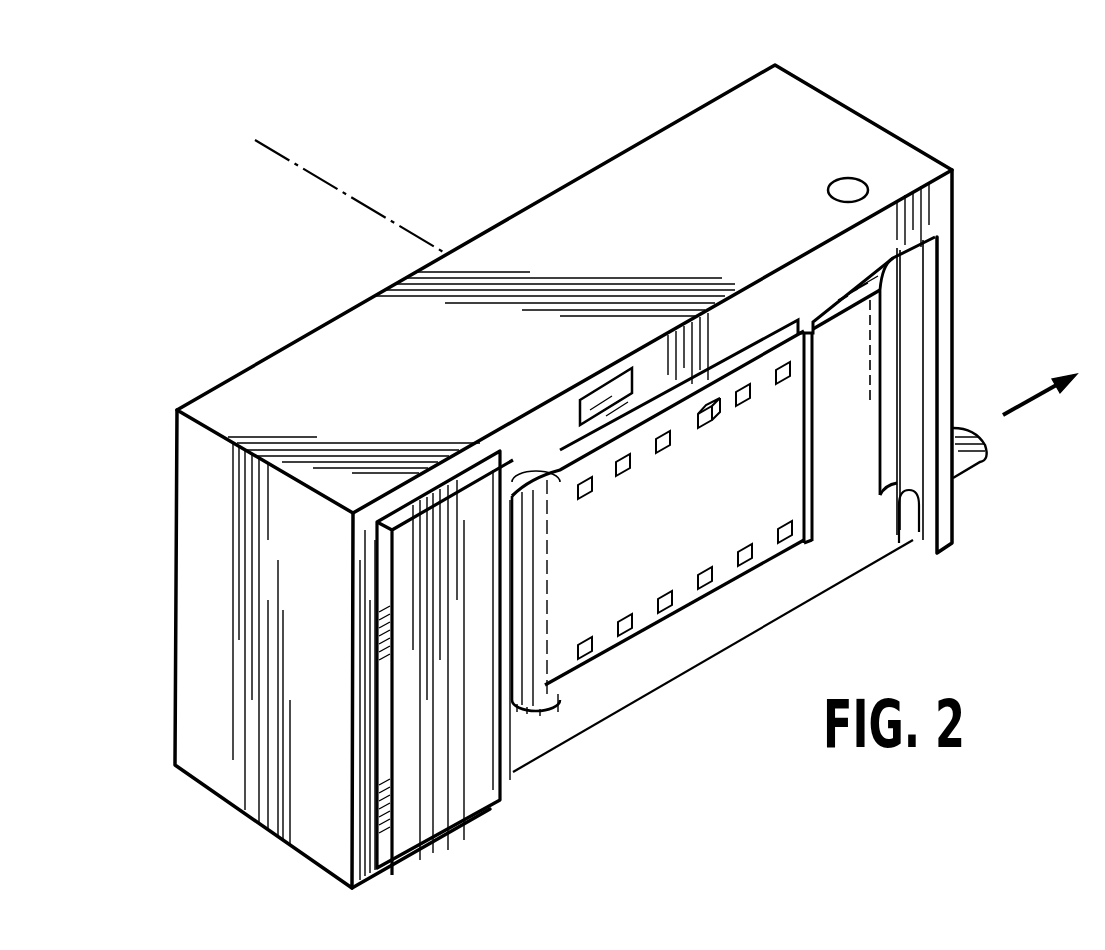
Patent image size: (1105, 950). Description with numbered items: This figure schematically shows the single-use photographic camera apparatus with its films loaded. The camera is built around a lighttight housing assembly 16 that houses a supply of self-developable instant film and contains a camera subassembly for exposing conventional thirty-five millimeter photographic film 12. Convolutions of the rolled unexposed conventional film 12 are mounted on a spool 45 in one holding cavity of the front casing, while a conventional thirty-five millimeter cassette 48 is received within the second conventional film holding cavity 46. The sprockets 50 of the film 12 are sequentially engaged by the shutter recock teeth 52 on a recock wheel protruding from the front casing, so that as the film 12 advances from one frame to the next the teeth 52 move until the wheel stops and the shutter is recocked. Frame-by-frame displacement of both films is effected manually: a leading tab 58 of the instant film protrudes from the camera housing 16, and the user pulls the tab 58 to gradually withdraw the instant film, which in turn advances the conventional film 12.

The conventional photographic film 12 is at (765, 360).
The lighttight housing assembly 16 is at (888, 150).
The spool 45 is at (553, 568).
The conventional film holding cavity 46 is at (900, 278).
The conventional 35 mm cassette 48 is at (882, 365).
The sprockets 50 is at (786, 384).
The shutter recock teeth 52 is at (717, 428).
The leading tab 58 is at (983, 457).